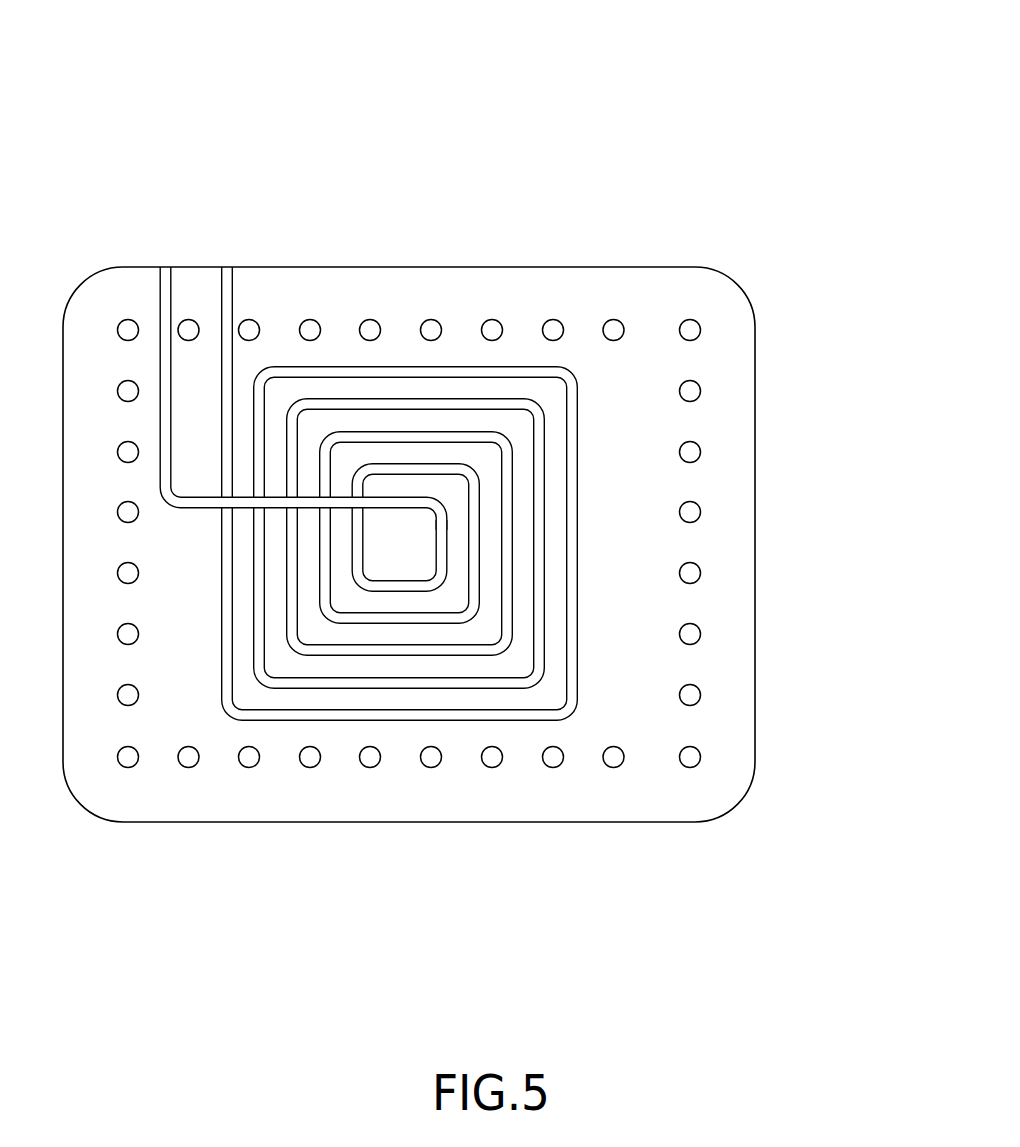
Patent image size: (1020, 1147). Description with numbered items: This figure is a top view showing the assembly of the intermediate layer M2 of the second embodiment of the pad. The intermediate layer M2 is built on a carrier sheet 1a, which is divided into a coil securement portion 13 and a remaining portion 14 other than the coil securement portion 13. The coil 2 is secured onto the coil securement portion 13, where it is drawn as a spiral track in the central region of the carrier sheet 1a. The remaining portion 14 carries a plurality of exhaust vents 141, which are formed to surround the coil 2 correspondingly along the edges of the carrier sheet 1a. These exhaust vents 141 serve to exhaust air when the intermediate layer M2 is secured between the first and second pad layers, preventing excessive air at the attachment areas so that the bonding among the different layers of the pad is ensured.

The intermediate layer M2 is at (475, 414).
The carrier sheet 1a is at (833, 407).
The coil 2 is at (465, 373).
The coil securement portion 13 is at (612, 435).
The remaining portion 14 is at (712, 542).
The exhaust vents 141 is at (690, 634).